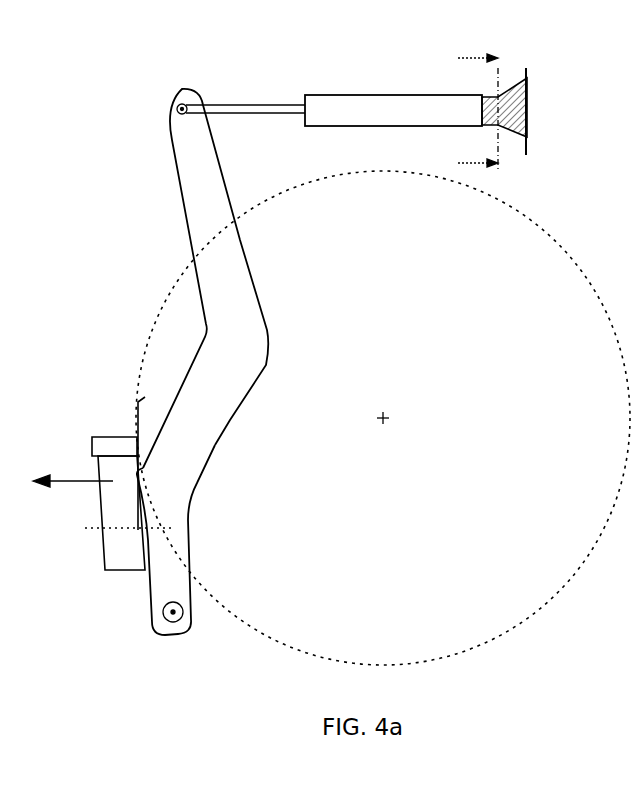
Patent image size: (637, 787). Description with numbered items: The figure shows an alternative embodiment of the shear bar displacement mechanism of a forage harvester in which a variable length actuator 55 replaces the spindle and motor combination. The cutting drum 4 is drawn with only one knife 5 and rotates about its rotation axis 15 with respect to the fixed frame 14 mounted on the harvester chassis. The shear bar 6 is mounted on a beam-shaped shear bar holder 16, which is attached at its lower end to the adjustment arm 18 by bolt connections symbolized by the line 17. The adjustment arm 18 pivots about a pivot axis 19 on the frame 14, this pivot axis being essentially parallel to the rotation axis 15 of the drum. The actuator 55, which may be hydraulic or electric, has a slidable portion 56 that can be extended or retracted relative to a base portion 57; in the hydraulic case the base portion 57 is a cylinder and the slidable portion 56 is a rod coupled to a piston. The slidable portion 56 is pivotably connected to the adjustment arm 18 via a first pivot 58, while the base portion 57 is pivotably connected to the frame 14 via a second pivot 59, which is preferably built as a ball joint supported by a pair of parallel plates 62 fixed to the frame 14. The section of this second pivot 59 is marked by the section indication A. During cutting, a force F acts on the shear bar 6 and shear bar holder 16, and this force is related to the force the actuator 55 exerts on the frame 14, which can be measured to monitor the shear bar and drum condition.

The cutting drum 4 is at (570, 256).
The knife 5 is at (157, 400).
The shear bar 6 is at (110, 448).
The frame 14 is at (527, 72).
The rotation axis 15 is at (399, 408).
The shear bar holder 16 is at (108, 500).
The bolt connection 17 is at (200, 520).
The adjustment arm 18 is at (233, 295).
The pivot axis 19 is at (173, 612).
The variable length actuator 55 is at (334, 79).
The slidable portion 56 is at (250, 107).
The base portion 57 is at (380, 107).
The first pivot 58 is at (181, 108).
The second pivot 59 is at (514, 90).
The parallel plates 62 is at (513, 132).
The stroke A is at (475, 97).
The force F is at (73, 470).